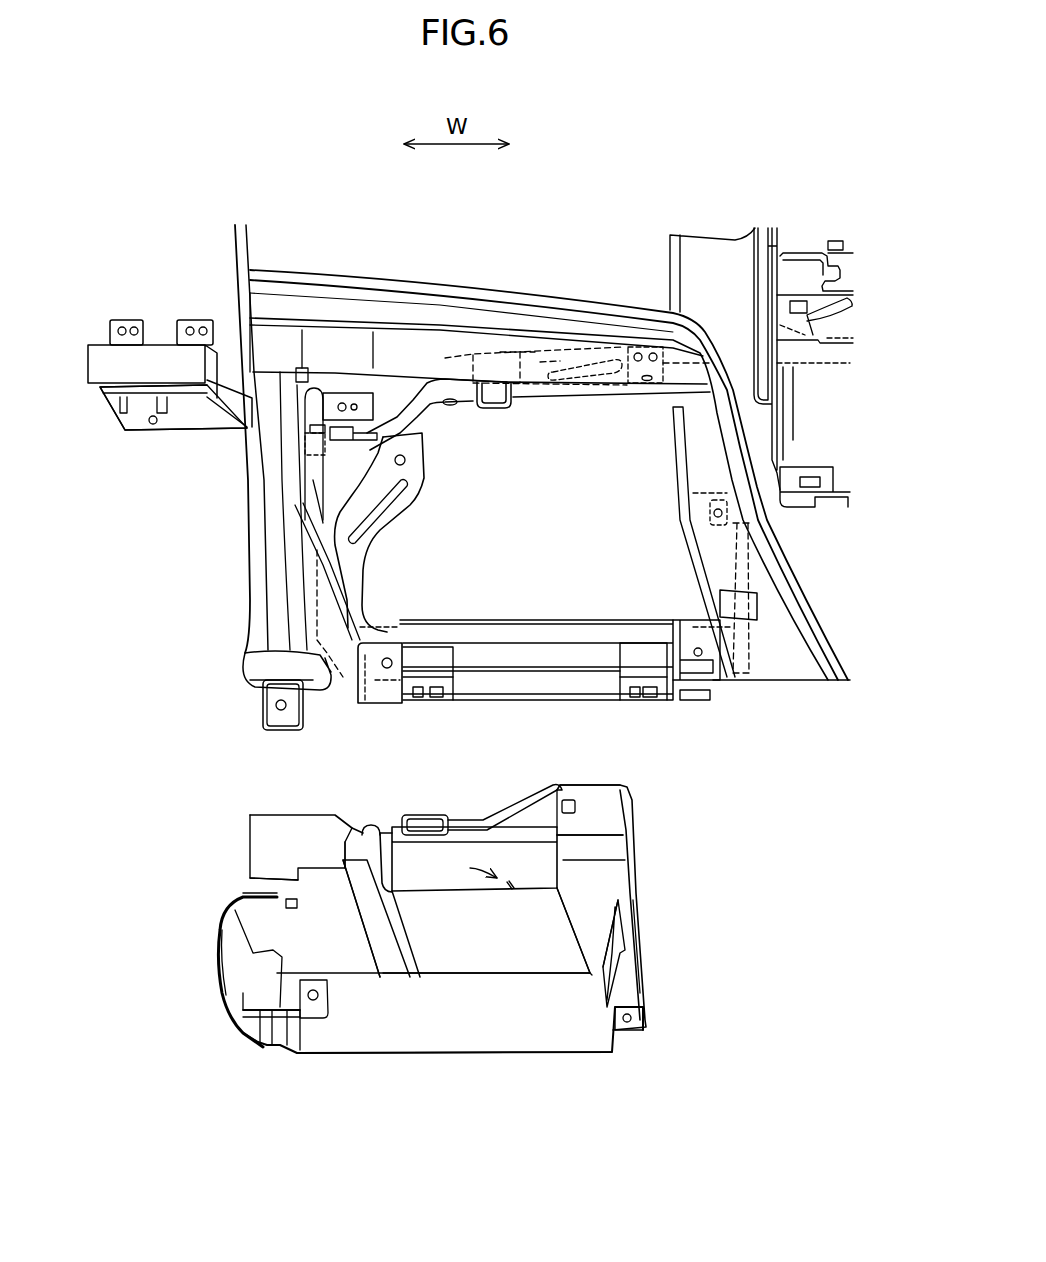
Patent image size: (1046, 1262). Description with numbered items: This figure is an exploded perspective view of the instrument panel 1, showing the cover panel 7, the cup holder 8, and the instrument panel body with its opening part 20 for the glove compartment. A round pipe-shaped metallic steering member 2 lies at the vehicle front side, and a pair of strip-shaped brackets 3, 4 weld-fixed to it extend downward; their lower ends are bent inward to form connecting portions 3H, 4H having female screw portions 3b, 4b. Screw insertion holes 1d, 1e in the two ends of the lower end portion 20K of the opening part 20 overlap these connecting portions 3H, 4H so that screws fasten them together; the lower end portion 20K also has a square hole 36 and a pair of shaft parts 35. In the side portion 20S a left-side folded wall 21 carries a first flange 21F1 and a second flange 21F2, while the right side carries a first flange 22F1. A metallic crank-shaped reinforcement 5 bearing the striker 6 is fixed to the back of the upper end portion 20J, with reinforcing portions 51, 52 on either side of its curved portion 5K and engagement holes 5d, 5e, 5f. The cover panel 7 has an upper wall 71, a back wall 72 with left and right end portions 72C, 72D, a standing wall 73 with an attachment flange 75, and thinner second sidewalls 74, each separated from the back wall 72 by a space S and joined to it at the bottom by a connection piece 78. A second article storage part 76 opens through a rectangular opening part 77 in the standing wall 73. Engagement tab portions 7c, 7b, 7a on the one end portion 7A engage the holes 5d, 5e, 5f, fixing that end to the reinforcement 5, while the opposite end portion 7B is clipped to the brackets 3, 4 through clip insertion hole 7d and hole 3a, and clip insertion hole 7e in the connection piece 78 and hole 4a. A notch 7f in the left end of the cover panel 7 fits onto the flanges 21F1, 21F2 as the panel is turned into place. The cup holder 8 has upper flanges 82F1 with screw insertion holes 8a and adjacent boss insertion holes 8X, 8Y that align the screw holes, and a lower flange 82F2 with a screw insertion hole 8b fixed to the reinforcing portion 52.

The instrument panel 1 is at (215, 150).
The steering member 2 is at (327, 334).
The bracket 3 is at (410, 513).
The clip insertion hole 3a is at (407, 463).
The female screw portion 3b is at (387, 660).
The connecting portion 3H is at (368, 703).
The screw insertion hole 1d is at (710, 658).
The screw insertion hole 1e is at (388, 670).
The bracket 4 is at (757, 566).
The clip insertion hole 4a is at (707, 513).
The female screw portion 4b is at (693, 627).
The connecting portion 4H is at (722, 665).
The reinforcement 5 is at (551, 397).
The engagement hole 5d is at (645, 386).
The engagement hole 5e is at (455, 407).
The engagement hole 5f is at (358, 437).
The curved portion 5K is at (443, 350).
The striker 6 is at (505, 412).
The cover panel 7 is at (680, 882).
The third engagement tab portion 7a is at (287, 898).
The second engagement tab portion 7b is at (370, 826).
The first engagement tab portion 7c is at (568, 800).
The clip insertion hole 7d is at (313, 1000).
The clip insertion hole 7e is at (622, 1033).
The notch 7f is at (243, 891).
The one end portion 7A is at (462, 837).
The opposite end portion 7B is at (492, 1037).
The cup holder 8 is at (152, 254).
The screw insertion hole 8a is at (135, 322).
The screw insertion hole 8b is at (155, 427).
The boss insertion hole 8X is at (110, 330).
The boss insertion hole 8Y is at (188, 323).
The opening part 20 is at (568, 533).
The upper end portion 20J is at (517, 350).
The lower end portion 20K is at (540, 688).
The side portion 20S is at (283, 613).
The left-side folded wall 21 is at (313, 578).
The first flange 21F1 is at (328, 548).
The second flange 21F2 is at (323, 523).
The first flange 22F1 is at (758, 600).
The shaft part 35 is at (423, 698).
The square hole 36 is at (443, 683).
The reinforcing portion 51 is at (588, 360).
The reinforcing portion 52 is at (375, 400).
The upper wall 71 is at (322, 887).
The back wall 72 is at (448, 1023).
The left end portion 72C is at (338, 1020).
The right end portion 72D is at (590, 1030).
The standing wall 73 is at (603, 843).
The second sidewall 74 is at (235, 974).
The attachment flange 75 is at (540, 807).
The second article storage part 76 is at (470, 880).
The opening part 77 is at (510, 888).
The connection piece 78 is at (275, 1033).
The upper flange 82F1 is at (113, 320).
The lower flange 82F2 is at (132, 428).
The space S is at (252, 995).